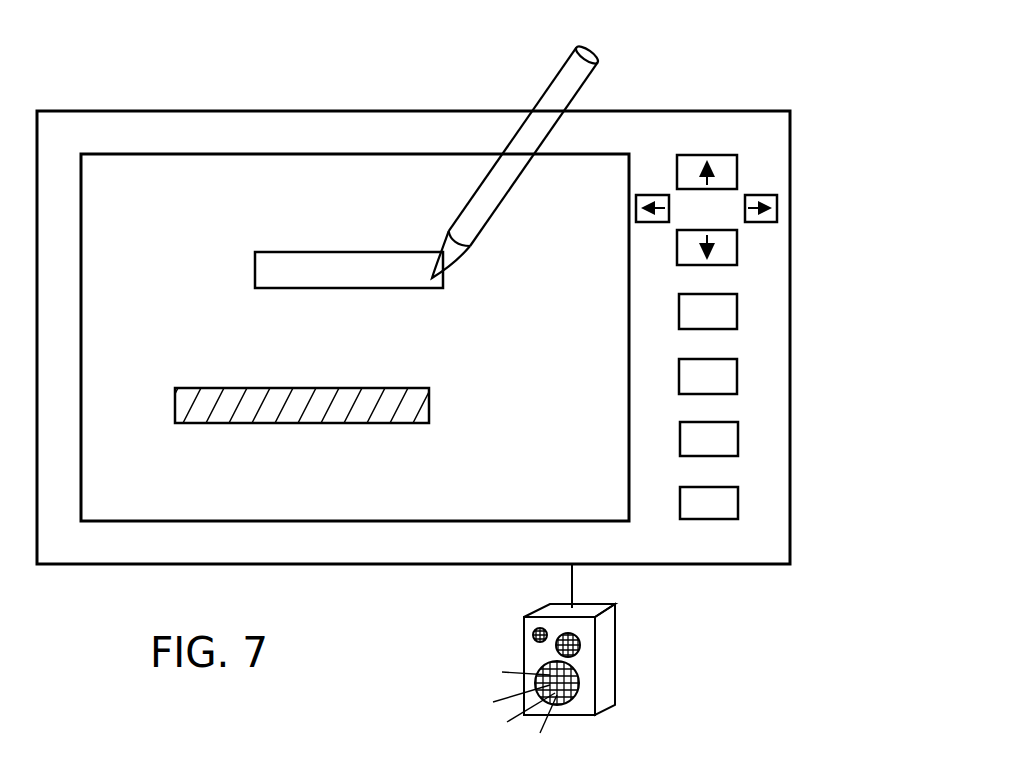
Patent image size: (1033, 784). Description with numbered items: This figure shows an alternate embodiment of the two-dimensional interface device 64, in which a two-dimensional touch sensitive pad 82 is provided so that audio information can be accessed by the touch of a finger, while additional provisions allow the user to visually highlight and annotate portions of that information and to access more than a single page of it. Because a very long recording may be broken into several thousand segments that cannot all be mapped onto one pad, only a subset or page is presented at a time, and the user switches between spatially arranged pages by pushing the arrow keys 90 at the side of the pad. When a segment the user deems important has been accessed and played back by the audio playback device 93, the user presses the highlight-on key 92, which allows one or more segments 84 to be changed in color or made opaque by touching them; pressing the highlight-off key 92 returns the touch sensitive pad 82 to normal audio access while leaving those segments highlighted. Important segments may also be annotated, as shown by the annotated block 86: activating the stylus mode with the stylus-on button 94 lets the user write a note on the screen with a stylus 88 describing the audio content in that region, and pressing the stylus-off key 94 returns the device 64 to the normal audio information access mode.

The two-dimensional interface device 64 is at (260, 75).
The two-dimensional touch sensitive pad 82 is at (167, 154).
The segments 84 is at (250, 424).
The annotated block 86 is at (300, 252).
The stylus 88 is at (554, 80).
The arrow keys 90 is at (653, 195).
The highlight-on key and highlight-off key 92 is at (737, 312).
The audio playback device 93 is at (607, 673).
The stylus-on button and stylus-off key 94 is at (738, 439).